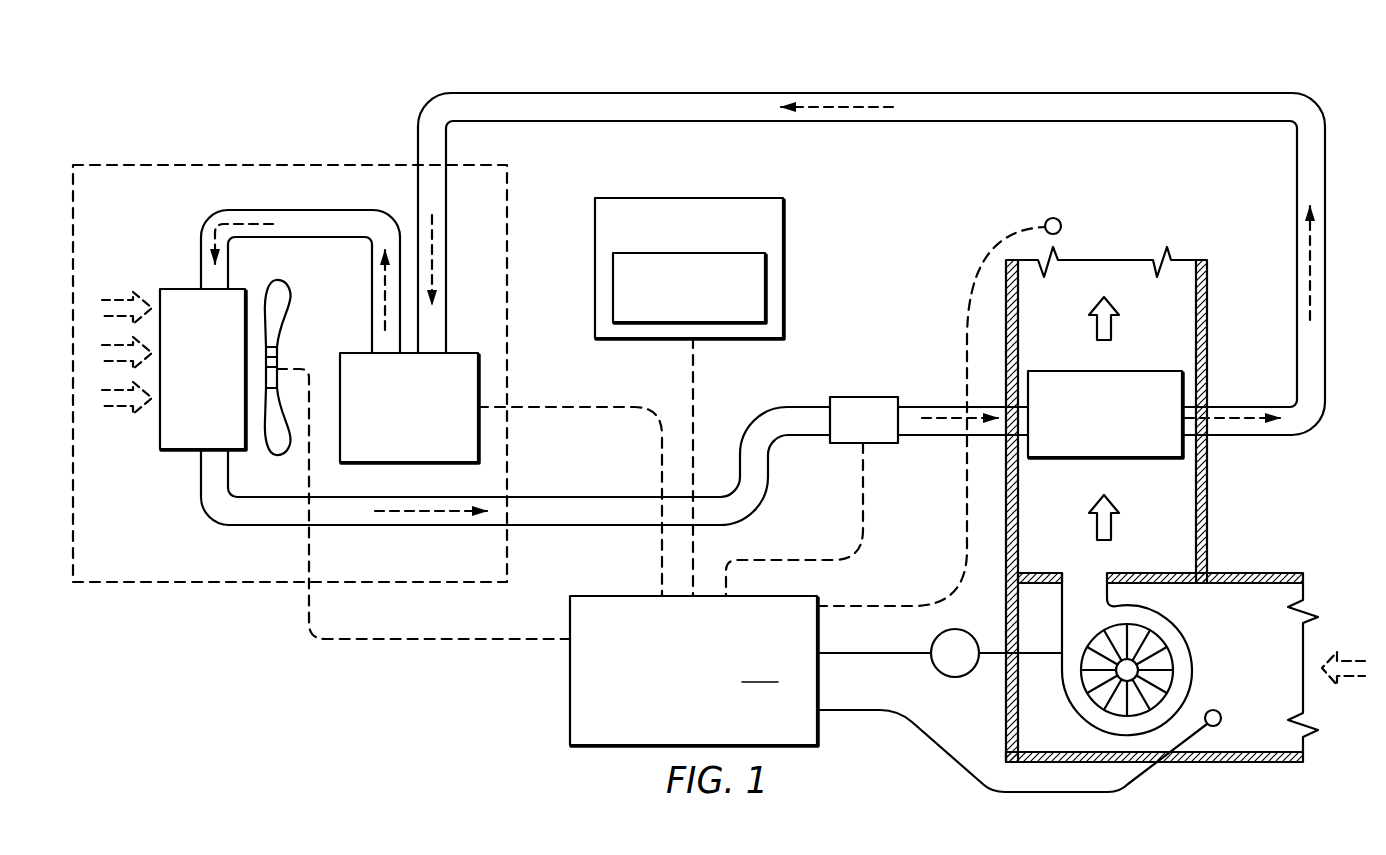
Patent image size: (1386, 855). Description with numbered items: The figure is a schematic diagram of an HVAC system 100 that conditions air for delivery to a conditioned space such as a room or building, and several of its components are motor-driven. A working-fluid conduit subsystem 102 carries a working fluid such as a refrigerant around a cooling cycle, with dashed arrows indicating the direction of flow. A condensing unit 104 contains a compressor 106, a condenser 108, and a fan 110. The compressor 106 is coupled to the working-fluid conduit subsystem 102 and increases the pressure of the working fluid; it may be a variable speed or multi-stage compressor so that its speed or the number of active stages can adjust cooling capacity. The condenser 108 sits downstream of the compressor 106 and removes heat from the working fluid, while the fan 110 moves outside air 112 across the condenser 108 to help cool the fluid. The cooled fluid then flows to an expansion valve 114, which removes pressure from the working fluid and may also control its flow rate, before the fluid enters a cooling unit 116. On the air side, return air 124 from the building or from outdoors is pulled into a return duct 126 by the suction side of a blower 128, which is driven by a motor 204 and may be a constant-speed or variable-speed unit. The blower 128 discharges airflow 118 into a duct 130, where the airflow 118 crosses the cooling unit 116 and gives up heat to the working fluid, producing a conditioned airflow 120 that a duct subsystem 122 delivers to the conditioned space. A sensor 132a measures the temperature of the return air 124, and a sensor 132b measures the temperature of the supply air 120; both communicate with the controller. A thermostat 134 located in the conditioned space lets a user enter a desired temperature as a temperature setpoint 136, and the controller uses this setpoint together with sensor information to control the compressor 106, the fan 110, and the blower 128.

The HVAC system 100 is at (1158, 37).
The working-fluid conduit subsystem 102 is at (590, 93).
The condensing unit 104 is at (283, 165).
The compressor 106 is at (393, 432).
The condenser 108 is at (158, 432).
The fan 110 is at (287, 301).
The air 112 is at (118, 295).
The expansion valve 114 is at (848, 434).
The cooling unit 116 is at (1089, 440).
The airflow 118 is at (1113, 522).
The conditioned airflow 120 is at (1113, 324).
The duct subsystem 122 is at (1208, 306).
The return air 124 is at (1350, 678).
The return duct 126 is at (1237, 762).
The blower 128 is at (1179, 634).
The duct 130 is at (1208, 487).
The sensor 132a is at (1221, 712).
The sensor 132b is at (1062, 226).
The thermostat 134 is at (783, 226).
The temperature setpoint 136 is at (767, 290).
The motor 204 is at (932, 669).